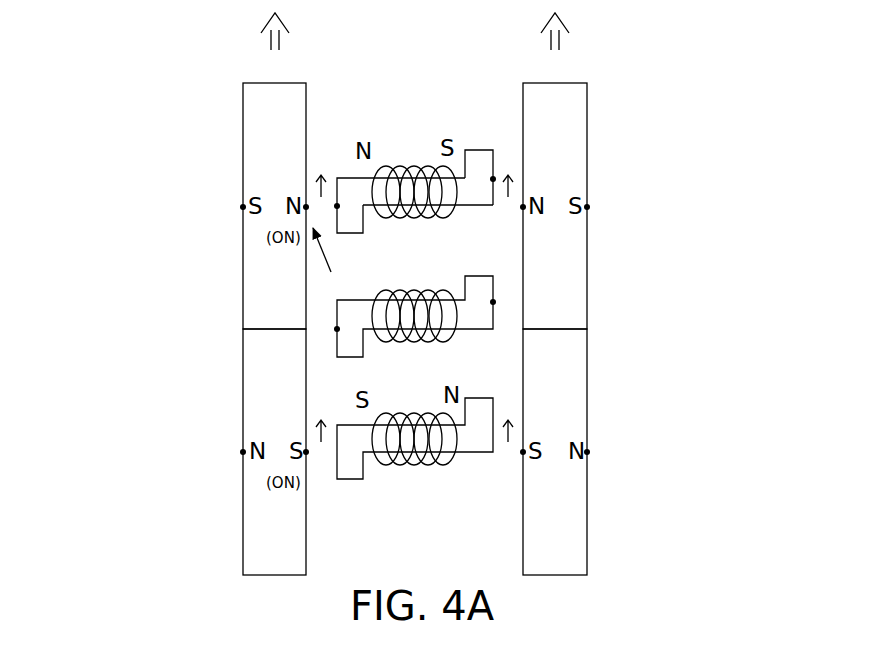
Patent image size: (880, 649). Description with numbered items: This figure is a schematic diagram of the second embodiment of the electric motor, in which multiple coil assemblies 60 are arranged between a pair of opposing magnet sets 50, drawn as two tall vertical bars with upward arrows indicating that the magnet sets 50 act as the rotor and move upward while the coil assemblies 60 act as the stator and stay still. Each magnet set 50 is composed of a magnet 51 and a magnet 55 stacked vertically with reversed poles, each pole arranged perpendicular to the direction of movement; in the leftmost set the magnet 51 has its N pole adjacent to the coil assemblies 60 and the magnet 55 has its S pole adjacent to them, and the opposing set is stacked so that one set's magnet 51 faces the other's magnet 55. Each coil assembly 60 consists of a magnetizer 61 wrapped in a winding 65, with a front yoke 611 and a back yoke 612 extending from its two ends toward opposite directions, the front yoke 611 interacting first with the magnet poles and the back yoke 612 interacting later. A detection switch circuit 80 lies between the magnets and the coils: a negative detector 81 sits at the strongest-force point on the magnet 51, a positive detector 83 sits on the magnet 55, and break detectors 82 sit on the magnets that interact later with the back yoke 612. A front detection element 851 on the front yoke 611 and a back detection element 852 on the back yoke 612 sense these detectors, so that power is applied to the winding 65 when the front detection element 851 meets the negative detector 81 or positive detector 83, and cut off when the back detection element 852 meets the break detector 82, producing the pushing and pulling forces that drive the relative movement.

The magnet set 50 is at (415, 287).
The magnet 51 is at (252, 153).
The magnet 55 is at (578, 135).
The coil assembly 60 is at (415, 251).
The magnetizer 61 is at (475, 205).
The front yoke 611 is at (358, 230).
The back yoke 612 is at (477, 157).
The winding 65 is at (412, 218).
The detection switch circuit 80 is at (331, 264).
The negative detector 81 is at (306, 207).
The break detector 82 is at (523, 207).
The positive detector 83 is at (306, 452).
The front detection element 851 is at (337, 206).
The back detection element 852 is at (493, 179).